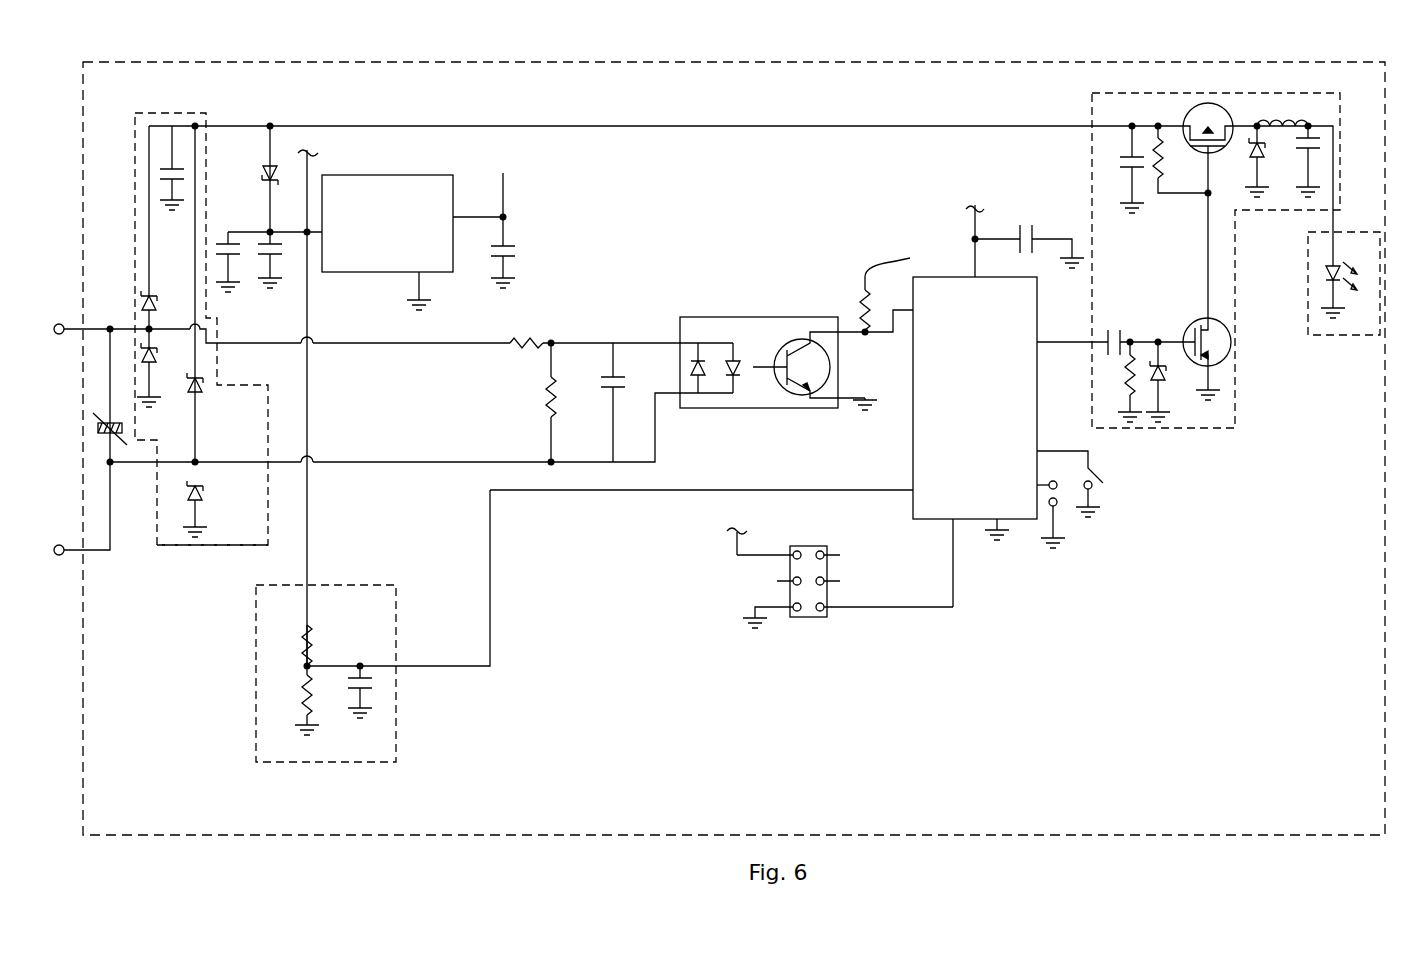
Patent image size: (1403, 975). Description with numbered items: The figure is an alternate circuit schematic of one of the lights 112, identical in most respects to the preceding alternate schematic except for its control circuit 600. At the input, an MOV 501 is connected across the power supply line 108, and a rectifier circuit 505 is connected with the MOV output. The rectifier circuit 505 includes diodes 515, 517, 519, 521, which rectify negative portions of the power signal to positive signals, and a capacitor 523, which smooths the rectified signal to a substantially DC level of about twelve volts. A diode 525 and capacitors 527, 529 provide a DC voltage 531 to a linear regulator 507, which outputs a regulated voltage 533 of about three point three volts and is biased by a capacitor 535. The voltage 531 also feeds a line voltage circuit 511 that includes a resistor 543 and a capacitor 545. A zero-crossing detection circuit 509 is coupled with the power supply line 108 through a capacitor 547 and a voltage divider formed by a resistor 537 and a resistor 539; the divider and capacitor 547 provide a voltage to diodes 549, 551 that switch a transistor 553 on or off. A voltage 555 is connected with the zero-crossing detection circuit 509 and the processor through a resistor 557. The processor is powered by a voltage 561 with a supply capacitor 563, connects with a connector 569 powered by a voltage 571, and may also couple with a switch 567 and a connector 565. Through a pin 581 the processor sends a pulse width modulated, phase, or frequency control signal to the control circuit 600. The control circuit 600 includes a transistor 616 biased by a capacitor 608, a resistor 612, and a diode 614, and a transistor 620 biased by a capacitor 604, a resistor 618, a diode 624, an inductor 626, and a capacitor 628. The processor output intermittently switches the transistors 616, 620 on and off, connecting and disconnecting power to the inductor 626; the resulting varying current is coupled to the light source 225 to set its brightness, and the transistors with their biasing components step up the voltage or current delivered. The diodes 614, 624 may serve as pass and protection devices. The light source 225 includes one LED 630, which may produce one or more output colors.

The power supply line 108 is at (66, 543).
The light 112 is at (1137, 835).
The light source 225 is at (1310, 335).
The MOV 501 is at (125, 485).
The rectifier circuit 505 is at (185, 545).
The linear regulator 507 is at (402, 175).
The zero-crossing detection circuit 509 is at (705, 317).
The line voltage circuit 511 is at (360, 762).
The diode 515 is at (155, 303).
The diode 517 is at (156, 380).
The diode 519 is at (198, 388).
The diode 521 is at (200, 493).
The capacitor 523 is at (165, 163).
The diode 525 is at (264, 179).
The capacitor 527 is at (228, 242).
The capacitor 529 is at (260, 263).
The DC voltage 531 is at (305, 150).
The voltage 533 is at (503, 173).
The capacitor 535 is at (488, 257).
The resistor 537 is at (532, 343).
The resistor 539 is at (548, 400).
The resistor 543 is at (300, 687).
The capacitor 545 is at (382, 685).
The capacitor 547 is at (600, 388).
The diode 549 is at (693, 395).
The diode 551 is at (735, 393).
The transistor 553 is at (792, 405).
The voltage 555 is at (895, 273).
The resistor 557 is at (856, 293).
The voltage 561 is at (975, 207).
The supply capacitor 563 is at (1035, 225).
The connector 565 is at (1060, 525).
The switch 567 is at (1110, 495).
The connector 569 is at (810, 617).
The voltage 571 is at (735, 532).
The pin 581 is at (1050, 342).
The control circuit 600 is at (1095, 453).
The capacitor 604 is at (1125, 150).
The capacitor 608 is at (1115, 325).
The resistor 612 is at (1120, 392).
The diode 614 is at (1165, 390).
The transistor 616 is at (1222, 375).
The resistor 618 is at (1146, 178).
The transistor 620 is at (1230, 110).
The diode 624 is at (1263, 172).
The inductor 626 is at (1295, 118).
The capacitor 628 is at (1317, 143).
The LED 630 is at (1330, 280).